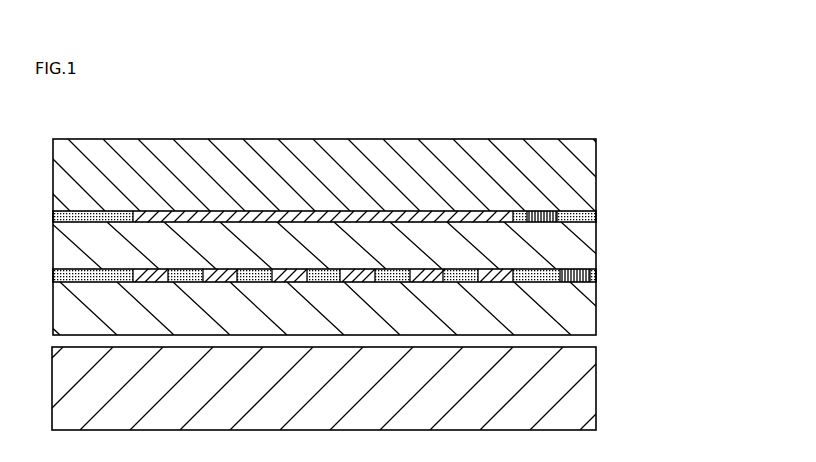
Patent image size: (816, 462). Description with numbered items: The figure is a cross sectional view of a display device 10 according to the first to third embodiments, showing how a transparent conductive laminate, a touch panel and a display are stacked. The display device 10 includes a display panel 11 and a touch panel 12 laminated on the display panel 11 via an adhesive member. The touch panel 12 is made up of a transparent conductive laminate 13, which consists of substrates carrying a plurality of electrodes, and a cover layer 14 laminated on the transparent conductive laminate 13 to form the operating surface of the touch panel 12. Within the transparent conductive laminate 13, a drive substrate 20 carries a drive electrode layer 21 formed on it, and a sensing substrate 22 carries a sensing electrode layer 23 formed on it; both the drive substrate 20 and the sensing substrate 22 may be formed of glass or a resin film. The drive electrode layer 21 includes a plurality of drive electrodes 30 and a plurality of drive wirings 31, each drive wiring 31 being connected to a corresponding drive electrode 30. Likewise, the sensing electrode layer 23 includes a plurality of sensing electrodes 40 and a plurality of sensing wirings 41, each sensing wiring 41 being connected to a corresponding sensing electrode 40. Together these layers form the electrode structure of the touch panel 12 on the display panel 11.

The display device 10 is at (563, 118).
The display panel 11 is at (596, 381).
The touch panel 12 is at (386, 237).
The transparent conductive laminate 13 is at (363, 270).
The cover layer 14 is at (596, 177).
The drive substrate 20 is at (336, 308).
The drive electrode layer 21 is at (361, 296).
The sensing substrate 22 is at (596, 245).
The sensing electrode layer 23 is at (361, 235).
The drive electrode 30 is at (203, 283).
The drive wiring 31 is at (590, 283).
The sensing electrode 40 is at (323, 223).
The sensing wiring 41 is at (557, 223).